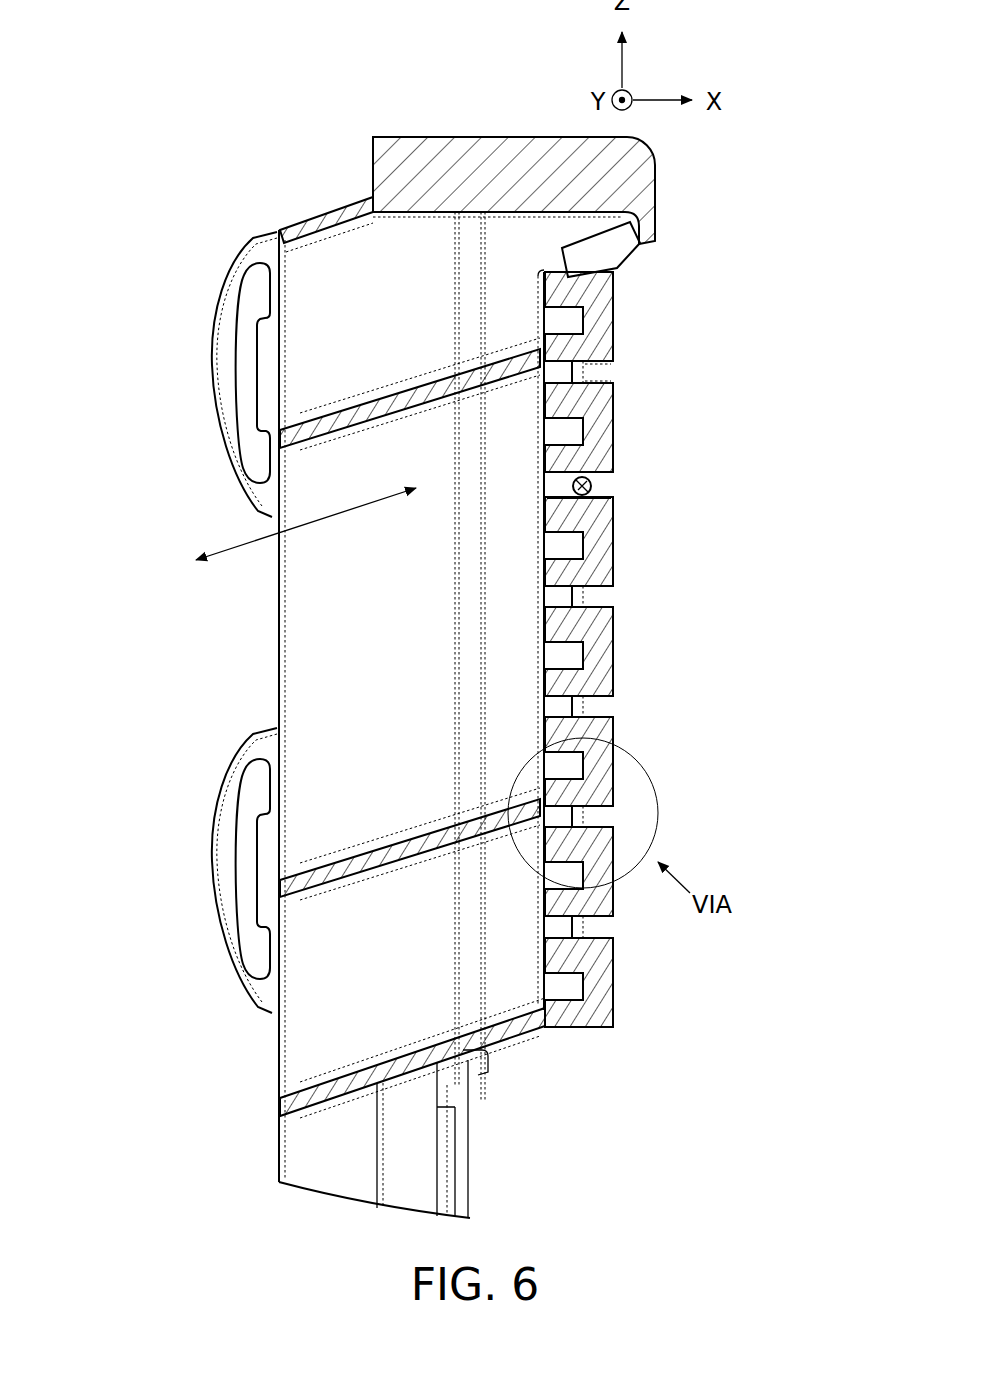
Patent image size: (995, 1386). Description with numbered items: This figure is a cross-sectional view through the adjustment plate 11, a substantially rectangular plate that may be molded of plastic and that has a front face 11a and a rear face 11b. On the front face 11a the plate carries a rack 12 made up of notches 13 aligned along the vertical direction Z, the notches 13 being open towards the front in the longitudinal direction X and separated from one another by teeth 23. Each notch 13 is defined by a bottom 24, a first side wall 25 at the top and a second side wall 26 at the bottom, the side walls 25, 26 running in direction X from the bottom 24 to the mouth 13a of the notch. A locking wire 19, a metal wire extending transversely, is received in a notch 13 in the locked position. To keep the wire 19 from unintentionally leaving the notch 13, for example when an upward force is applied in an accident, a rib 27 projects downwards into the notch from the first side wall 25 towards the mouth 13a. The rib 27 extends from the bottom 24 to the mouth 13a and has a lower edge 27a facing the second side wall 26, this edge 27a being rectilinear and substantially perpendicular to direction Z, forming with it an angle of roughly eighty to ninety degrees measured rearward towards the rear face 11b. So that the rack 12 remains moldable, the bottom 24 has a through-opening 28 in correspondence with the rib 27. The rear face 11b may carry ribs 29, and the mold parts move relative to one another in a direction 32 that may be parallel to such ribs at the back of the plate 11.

The adjustment plate 11 is at (446, 122).
The front face 11a is at (735, 283).
The rear face 11b is at (180, 351).
The rack 12 is at (639, 604).
The notch 13 is at (542, 487).
The mouth 13a is at (626, 372).
The locking wire 19 is at (592, 482).
The tooth 23 is at (615, 325).
The bottom 24 is at (605, 597).
The first side wall 25 is at (616, 660).
The second side wall 26 is at (615, 726).
The rib 27 is at (634, 532).
The lower edge 27a is at (616, 526).
The through-opening 28 is at (545, 508).
The rib 29 is at (318, 425).
The direction 32 is at (240, 552).